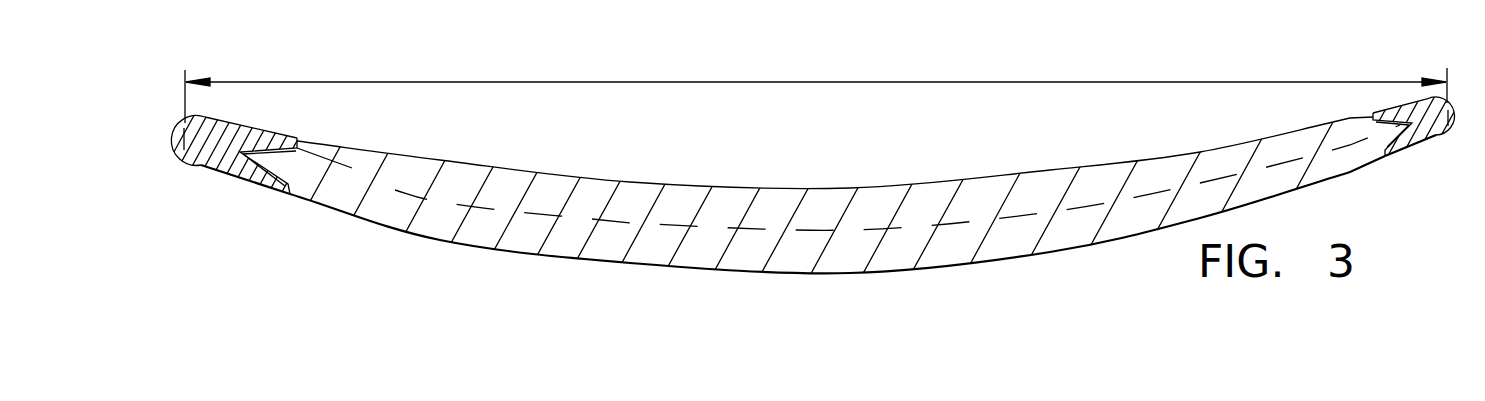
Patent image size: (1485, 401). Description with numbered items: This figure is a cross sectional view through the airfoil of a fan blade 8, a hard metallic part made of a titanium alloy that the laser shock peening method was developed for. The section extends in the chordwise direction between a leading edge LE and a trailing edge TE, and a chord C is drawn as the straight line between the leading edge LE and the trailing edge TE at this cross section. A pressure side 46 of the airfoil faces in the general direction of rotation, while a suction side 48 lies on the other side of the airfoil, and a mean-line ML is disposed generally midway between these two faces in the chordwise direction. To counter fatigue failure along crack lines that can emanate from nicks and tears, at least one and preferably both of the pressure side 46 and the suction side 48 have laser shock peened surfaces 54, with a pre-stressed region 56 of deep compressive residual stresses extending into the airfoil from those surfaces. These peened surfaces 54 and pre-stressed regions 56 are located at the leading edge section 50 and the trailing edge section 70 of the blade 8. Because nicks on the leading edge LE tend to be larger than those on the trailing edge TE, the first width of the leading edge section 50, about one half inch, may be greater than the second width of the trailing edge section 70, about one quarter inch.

The fan blade 8 is at (885, 178).
The pressure side 46 is at (608, 176).
The suction side 48 is at (505, 250).
The leading edge section 50 is at (184, 141).
The laser shock peened surfaces 54 is at (229, 121).
The pre-stressed region 56 is at (285, 135).
The trailing edge section 70 is at (1421, 142).
The leading edge LE is at (186, 137).
The trailing edge TE is at (1447, 112).
The chord C is at (497, 85).
The mean-line ML is at (755, 228).